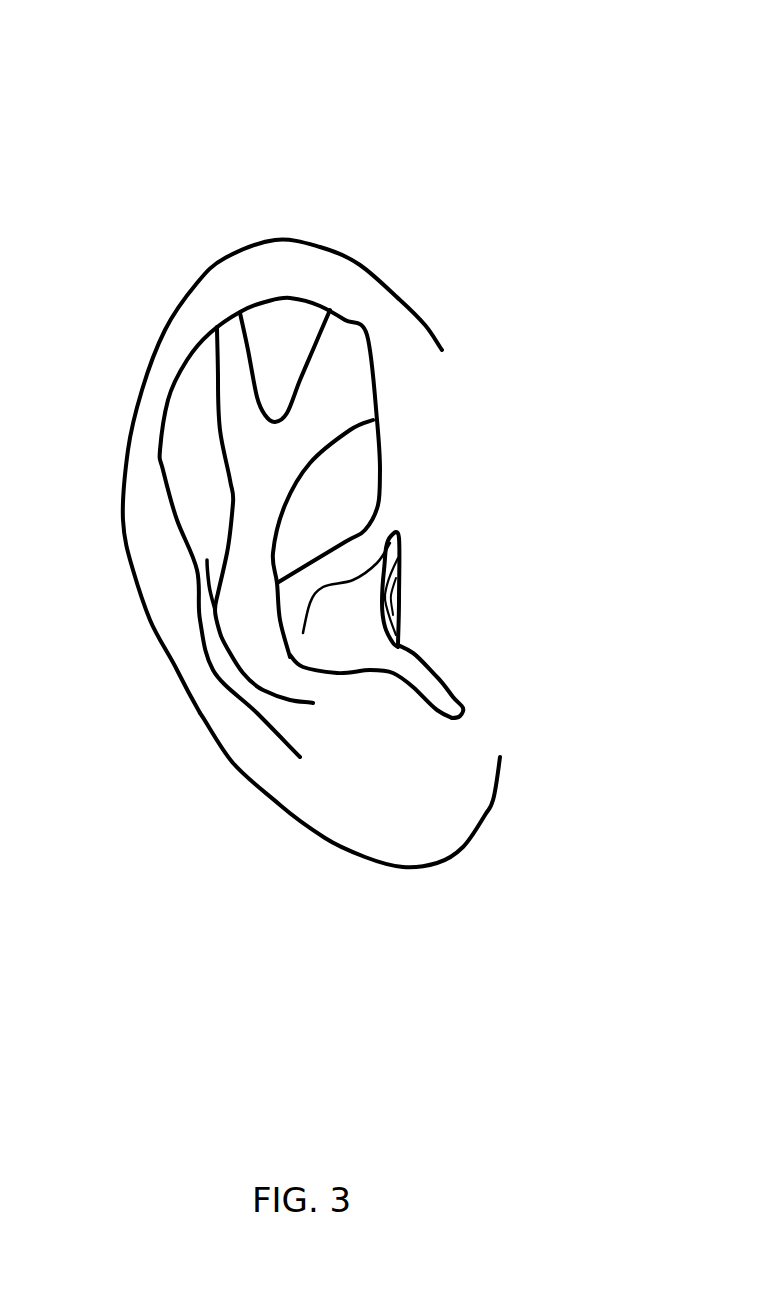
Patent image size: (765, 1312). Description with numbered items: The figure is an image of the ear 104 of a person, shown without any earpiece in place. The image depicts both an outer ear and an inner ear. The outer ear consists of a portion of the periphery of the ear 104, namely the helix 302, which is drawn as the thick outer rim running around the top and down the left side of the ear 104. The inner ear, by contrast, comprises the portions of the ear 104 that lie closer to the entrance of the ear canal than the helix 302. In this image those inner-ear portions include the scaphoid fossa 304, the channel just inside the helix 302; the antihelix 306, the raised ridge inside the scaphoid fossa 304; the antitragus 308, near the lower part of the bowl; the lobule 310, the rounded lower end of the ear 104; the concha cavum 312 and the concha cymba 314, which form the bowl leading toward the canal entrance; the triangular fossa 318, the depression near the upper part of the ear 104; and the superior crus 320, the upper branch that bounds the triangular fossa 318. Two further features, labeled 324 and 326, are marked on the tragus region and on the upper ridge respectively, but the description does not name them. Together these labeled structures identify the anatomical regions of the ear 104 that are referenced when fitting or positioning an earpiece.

The ear 104 is at (420, 116).
The helix 302 is at (170, 333).
The scaphoid fossa 304 is at (192, 470).
The antihelix 306 is at (243, 560).
The antitragus 308 is at (363, 692).
The lobule 310 is at (423, 830).
The concha cavum 312 is at (343, 652).
The concha cymba 314 is at (363, 463).
The triangular fossa 318 is at (280, 362).
The superior crus 320 is at (230, 337).
The tragus 324 is at (393, 600).
The crus of antihelix 326 is at (350, 407).